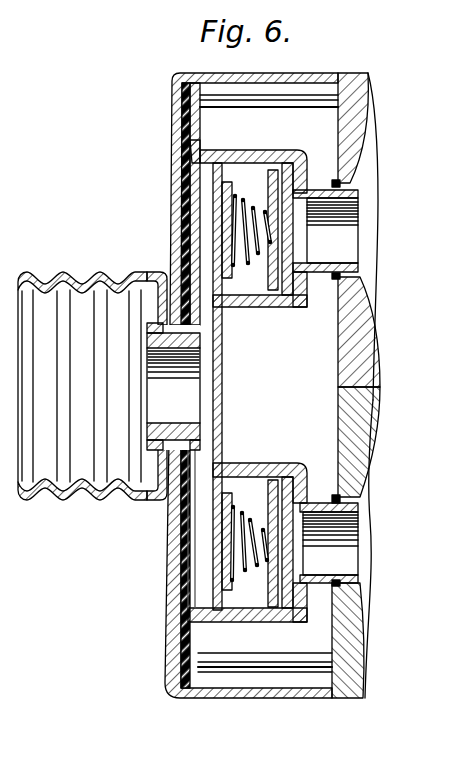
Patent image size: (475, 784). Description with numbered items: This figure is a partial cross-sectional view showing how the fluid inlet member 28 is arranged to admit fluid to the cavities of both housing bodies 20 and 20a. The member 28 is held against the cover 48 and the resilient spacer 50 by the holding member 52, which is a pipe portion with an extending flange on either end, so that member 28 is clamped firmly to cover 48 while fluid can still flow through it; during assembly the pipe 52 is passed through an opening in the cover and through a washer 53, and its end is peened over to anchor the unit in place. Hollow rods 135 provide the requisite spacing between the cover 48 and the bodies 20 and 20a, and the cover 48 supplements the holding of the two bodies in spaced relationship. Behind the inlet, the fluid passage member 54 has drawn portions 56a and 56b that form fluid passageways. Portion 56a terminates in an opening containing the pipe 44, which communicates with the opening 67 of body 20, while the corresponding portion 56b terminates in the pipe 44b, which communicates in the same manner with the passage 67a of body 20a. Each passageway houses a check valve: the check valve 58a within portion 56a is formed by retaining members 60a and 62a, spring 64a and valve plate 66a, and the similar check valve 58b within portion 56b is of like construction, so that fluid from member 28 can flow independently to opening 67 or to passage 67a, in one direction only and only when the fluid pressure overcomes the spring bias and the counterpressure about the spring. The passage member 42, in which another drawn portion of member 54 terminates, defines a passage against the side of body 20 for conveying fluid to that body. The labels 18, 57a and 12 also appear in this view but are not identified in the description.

The cover 48 is at (178, 82).
The hollow rods 135 is at (226, 97).
The body 20a is at (348, 80).
The fluid passage member 54 is at (196, 120).
The resilient spacer 50 is at (192, 190).
The drawn portion 56b is at (258, 158).
The fluid check valve 58b is at (255, 190).
The opening 67a is at (360, 222).
The pipe 44b is at (318, 272).
The shaft 18 is at (9, 359).
The fluid inlet member 28 is at (47, 280).
The holding member 52 is at (150, 330).
The washer 53 is at (170, 272).
The wall 57a is at (224, 390).
The retaining member 60a is at (250, 525).
The spring 64a is at (262, 510).
The body 20 is at (360, 442).
The opening 67 is at (362, 545).
The check valve 58a is at (264, 598).
The pipe 44 is at (319, 585).
The retaining member 62a is at (290, 630).
The valve plate 66a is at (190, 607).
The drawn portion 56a is at (185, 630).
The passage member 42 is at (13, 654).
The assembly 12 is at (5, 614).